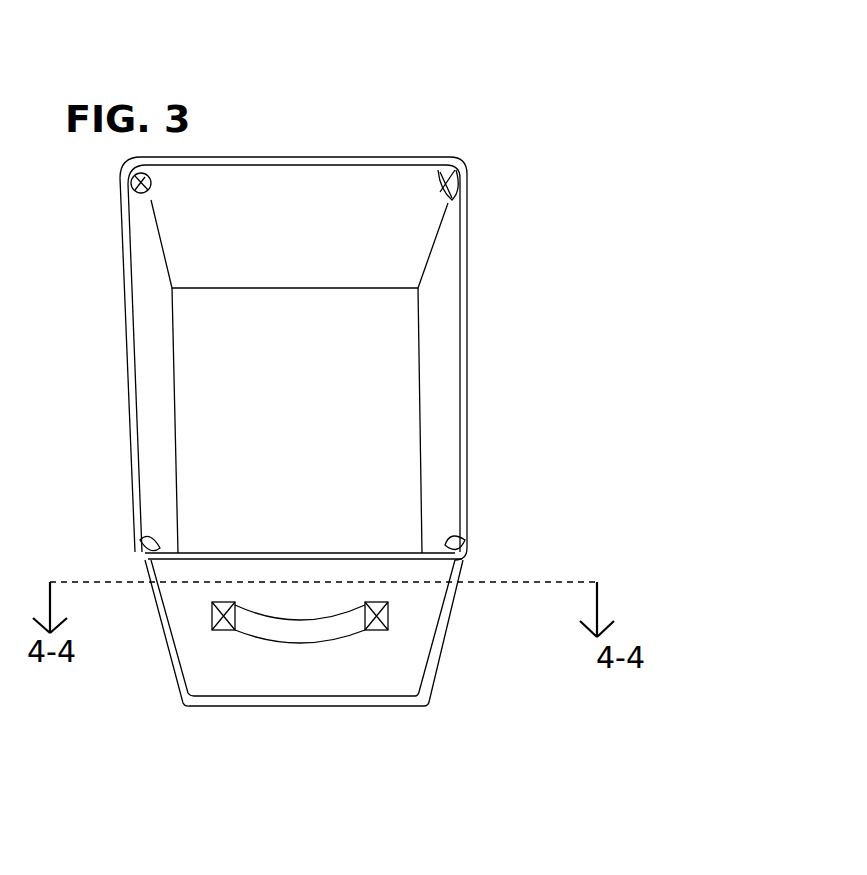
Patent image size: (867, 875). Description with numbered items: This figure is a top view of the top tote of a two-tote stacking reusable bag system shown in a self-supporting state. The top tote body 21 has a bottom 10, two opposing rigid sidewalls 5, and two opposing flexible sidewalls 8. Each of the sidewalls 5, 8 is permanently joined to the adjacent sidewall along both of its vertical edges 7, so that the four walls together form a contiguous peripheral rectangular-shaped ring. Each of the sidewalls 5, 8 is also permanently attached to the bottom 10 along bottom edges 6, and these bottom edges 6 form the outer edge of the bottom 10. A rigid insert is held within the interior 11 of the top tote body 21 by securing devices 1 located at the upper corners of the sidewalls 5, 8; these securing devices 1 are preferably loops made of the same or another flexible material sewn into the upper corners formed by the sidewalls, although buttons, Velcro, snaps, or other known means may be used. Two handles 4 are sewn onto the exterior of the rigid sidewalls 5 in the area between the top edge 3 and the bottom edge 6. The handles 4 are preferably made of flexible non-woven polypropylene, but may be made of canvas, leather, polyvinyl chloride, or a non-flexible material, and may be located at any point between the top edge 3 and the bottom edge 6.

The top tote body 21 is at (732, 238).
The securing devices 1 is at (440, 182).
The top edge 3 is at (325, 158).
The interior 11 is at (278, 200).
The flexible sidewalls 8 is at (444, 402).
The bottom 10 is at (345, 453).
The rigid sidewalls 5 is at (428, 592).
The vertical edges 7 is at (442, 637).
The bottom edges 6 is at (387, 706).
The handles 4 is at (282, 632).